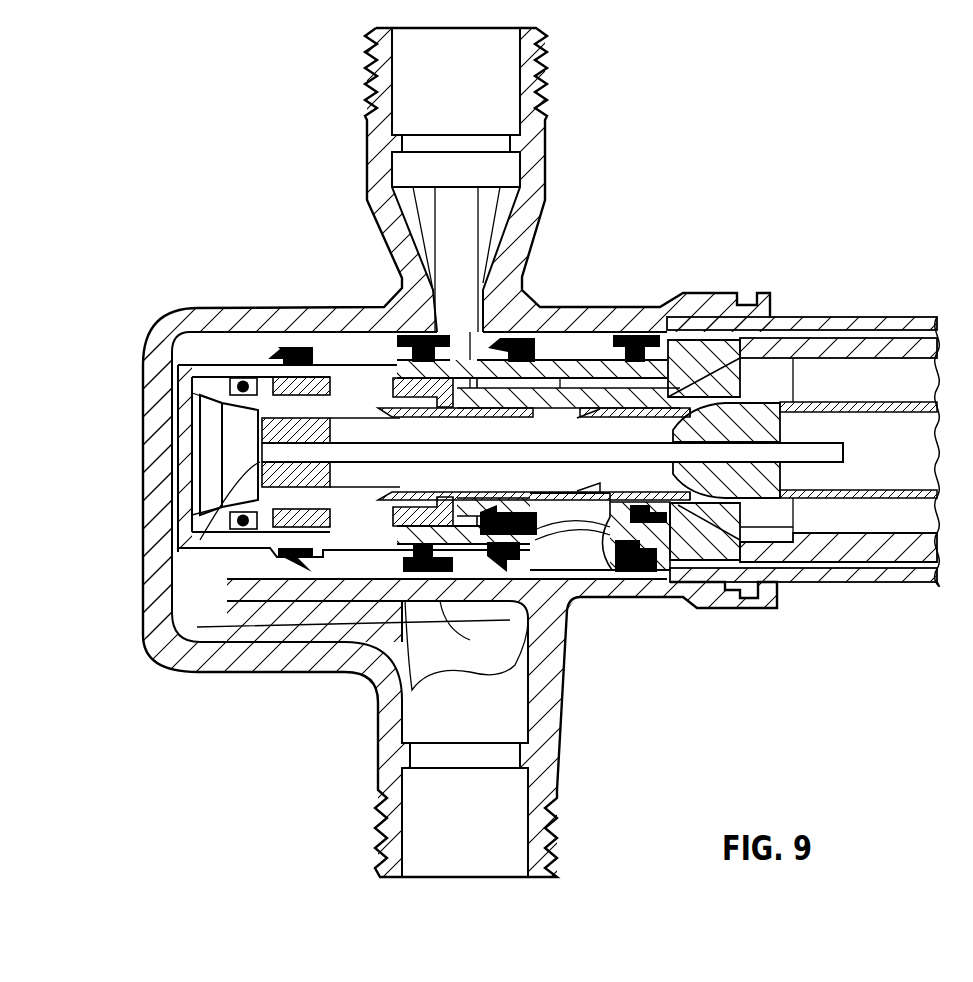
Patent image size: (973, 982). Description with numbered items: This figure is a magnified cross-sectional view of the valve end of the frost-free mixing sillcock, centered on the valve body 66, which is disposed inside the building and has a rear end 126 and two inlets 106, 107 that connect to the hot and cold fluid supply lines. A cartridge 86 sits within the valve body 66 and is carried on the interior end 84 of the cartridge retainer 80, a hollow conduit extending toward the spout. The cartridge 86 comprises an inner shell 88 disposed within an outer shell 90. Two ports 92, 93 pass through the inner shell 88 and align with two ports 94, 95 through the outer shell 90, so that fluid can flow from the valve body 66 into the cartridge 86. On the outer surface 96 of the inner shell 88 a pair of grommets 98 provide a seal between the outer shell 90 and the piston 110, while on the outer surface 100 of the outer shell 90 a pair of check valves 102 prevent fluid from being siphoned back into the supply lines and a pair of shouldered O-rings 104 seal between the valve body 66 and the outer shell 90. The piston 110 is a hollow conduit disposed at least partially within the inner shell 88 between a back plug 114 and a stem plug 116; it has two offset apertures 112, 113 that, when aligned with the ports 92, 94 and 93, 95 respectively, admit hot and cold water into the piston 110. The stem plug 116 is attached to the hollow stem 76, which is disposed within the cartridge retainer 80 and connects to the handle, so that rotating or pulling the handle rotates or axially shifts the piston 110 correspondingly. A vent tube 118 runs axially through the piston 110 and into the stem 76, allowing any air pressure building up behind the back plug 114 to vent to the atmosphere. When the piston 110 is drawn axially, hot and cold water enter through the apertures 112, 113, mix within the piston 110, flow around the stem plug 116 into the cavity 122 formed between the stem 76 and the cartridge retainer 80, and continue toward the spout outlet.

The valve body 66 is at (645, 316).
The stem 76 is at (900, 489).
The cartridge retainer 80 is at (896, 324).
The interior end 84 is at (800, 348).
The cartridge 86 is at (211, 372).
The inner shell 88 is at (585, 400).
The outer shell 90 is at (340, 632).
The port 92 is at (575, 517).
The port 93 is at (331, 451).
The port 94 is at (560, 525).
The port 95 is at (356, 384).
The outer surface 96 is at (528, 386).
The grommets 98 is at (286, 348).
The outer surface 100 is at (382, 622).
The check valves 102 is at (305, 351).
The shouldered O-rings 104 is at (395, 270).
The inlet 106 is at (471, 88).
The inlet 107 is at (481, 838).
The piston 110 is at (605, 491).
The aperture 112 is at (564, 492).
The aperture 113 is at (395, 421).
The back plug 114 is at (226, 484).
The stem plug 116 is at (786, 438).
The vent tube 118 is at (811, 462).
The cavity 122 is at (899, 391).
The rear end 126 is at (143, 447).